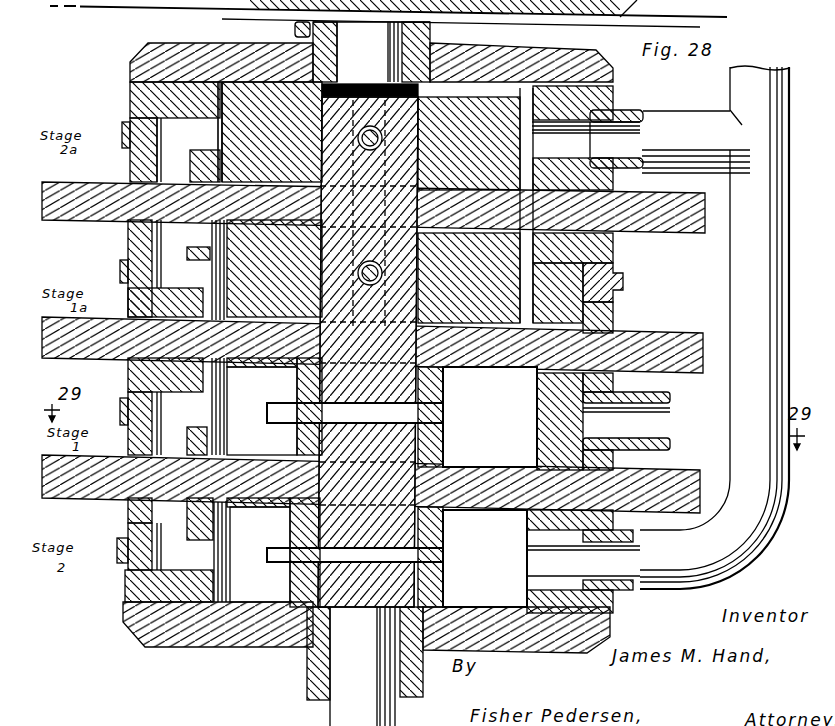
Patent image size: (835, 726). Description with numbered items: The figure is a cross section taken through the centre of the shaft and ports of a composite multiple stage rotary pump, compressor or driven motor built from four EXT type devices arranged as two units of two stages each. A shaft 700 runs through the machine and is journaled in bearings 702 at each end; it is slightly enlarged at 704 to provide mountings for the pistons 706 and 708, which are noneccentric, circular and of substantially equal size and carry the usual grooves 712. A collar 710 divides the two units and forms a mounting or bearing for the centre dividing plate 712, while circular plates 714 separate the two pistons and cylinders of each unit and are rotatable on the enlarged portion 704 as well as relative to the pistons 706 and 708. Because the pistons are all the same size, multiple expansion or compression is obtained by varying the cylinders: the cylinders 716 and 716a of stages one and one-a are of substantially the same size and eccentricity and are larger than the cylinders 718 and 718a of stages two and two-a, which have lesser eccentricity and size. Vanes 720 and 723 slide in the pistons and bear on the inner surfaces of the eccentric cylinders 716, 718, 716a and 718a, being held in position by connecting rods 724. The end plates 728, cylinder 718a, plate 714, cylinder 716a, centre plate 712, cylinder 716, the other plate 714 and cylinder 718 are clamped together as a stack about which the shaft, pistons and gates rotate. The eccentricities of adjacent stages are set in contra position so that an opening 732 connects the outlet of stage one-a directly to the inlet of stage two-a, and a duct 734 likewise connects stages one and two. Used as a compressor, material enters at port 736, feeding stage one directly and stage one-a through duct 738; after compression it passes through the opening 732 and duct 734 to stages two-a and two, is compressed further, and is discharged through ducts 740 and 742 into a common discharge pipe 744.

The shaft 700 is at (335, 36).
The bearings 702 is at (407, 67).
The enlarged portion of the shaft 704 is at (413, 77).
The piston 706 is at (487, 110).
The piston 708 is at (283, 432).
The collar 710 is at (283, 372).
The centre dividing plate 712 is at (150, 185).
The circular dividing plate 714 is at (620, 478).
The cylinder of stage 1 716 is at (128, 375).
The cylinder of stage 1a 716a is at (128, 255).
The cylinder of stage 2 718 is at (128, 517).
The cylinder of stage 2a 718a is at (190, 132).
The vane 720 is at (473, 527).
The vane 723 is at (398, 190).
The connecting rod 724 is at (225, 136).
The end plate 728 is at (600, 84).
The opening 732 is at (130, 232).
The duct 734 is at (117, 558).
The port 736 is at (662, 422).
The duct 738 is at (615, 311).
The duct 740 is at (696, 151).
The duct 742 is at (607, 570).
The common discharge pipe 744 is at (753, 93).